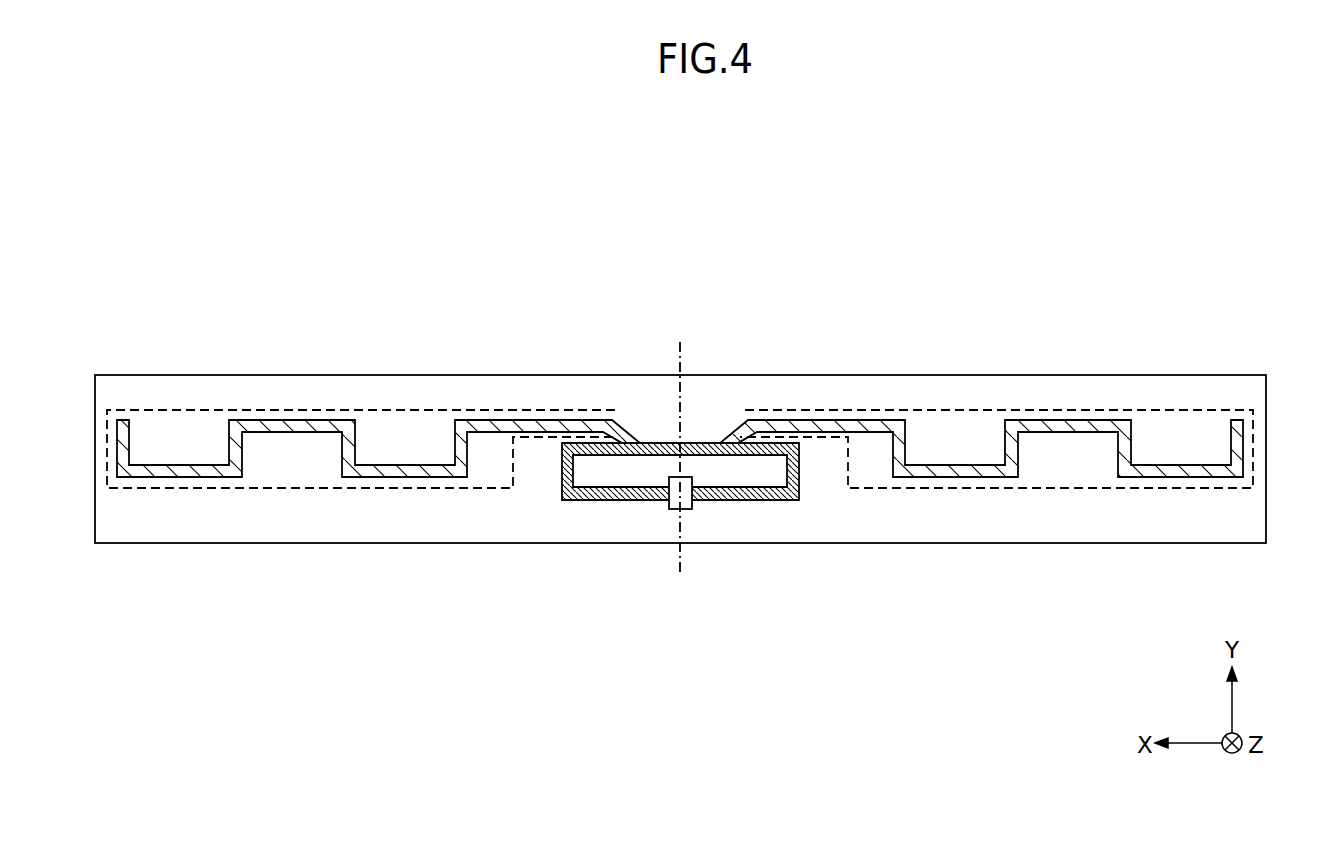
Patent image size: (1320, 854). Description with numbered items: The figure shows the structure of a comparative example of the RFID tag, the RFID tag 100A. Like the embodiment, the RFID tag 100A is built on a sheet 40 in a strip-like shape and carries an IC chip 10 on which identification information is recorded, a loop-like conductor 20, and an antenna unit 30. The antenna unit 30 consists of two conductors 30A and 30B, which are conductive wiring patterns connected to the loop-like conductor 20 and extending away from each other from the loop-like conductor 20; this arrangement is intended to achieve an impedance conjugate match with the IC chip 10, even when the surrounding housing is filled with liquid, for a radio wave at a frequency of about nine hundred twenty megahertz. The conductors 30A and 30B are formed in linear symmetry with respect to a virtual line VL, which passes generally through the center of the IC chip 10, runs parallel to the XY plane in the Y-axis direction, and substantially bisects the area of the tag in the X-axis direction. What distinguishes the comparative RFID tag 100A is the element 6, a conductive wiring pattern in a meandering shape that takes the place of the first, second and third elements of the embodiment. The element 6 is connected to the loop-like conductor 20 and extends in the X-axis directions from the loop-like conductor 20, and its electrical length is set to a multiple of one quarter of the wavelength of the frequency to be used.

The element 6 is at (1235, 442).
The IC chip 10 is at (693, 503).
The loop-like conductor 20 is at (790, 470).
The antenna unit 30 is at (680, 374).
The conductor 30A is at (975, 396).
The conductor 30B is at (624, 418).
The sheet 40 is at (1208, 532).
The RFID tag 100A is at (1171, 220).
The virtual line VL is at (680, 564).